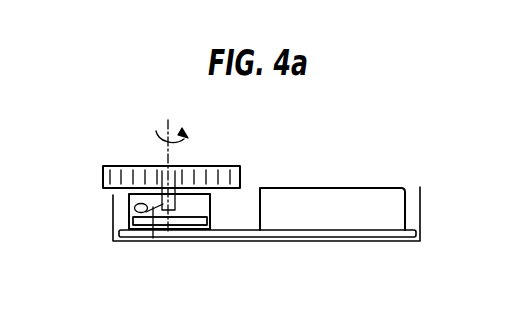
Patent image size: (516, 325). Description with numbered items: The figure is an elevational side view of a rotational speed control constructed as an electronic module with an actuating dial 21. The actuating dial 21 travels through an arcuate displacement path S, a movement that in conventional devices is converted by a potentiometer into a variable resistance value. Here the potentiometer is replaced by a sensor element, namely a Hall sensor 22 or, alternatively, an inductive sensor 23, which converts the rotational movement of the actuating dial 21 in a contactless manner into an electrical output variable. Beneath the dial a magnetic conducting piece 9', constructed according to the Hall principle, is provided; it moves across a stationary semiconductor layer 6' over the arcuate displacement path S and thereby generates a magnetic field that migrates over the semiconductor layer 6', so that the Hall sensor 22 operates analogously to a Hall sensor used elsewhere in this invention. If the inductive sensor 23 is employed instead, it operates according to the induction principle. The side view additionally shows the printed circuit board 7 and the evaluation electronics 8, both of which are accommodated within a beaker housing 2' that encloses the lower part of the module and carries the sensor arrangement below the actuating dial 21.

The actuating dial 21 is at (140, 173).
The arcuate displacement path S is at (188, 139).
The magnetic conducting piece 9' is at (121, 192).
The Hall sensor 22 is at (118, 218).
The inductive sensor 23 is at (170, 221).
The semiconductor layer 6' is at (142, 246).
The beaker housing 2' is at (267, 259).
The printed circuit board 7 is at (392, 233).
The evaluation electronics 8 is at (317, 198).